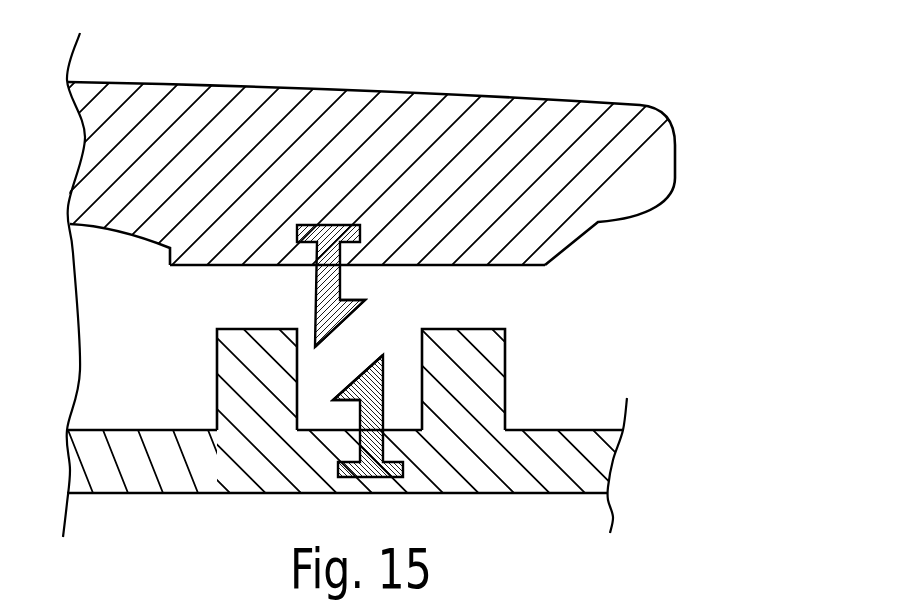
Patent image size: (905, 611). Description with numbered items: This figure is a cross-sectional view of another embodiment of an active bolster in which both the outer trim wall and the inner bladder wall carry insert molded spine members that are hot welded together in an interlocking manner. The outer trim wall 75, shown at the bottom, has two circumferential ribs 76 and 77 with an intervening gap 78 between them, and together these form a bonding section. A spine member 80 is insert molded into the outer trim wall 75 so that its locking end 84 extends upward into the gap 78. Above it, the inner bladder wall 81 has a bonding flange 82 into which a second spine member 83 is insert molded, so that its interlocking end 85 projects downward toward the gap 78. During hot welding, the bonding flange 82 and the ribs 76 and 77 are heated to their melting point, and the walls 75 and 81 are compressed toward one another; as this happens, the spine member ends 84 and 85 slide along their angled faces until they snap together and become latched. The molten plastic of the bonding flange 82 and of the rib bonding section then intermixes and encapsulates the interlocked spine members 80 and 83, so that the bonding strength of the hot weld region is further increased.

The outer trim wall 75 is at (140, 478).
The circumferential rib 76 is at (230, 355).
The circumferential rib 77 is at (492, 387).
The intervening gap 78 is at (405, 365).
The spine member 80 is at (373, 442).
The inner bladder wall 81 is at (550, 117).
The bonding flange 82 is at (522, 247).
The spine member 83 is at (321, 226).
The locking end 84 is at (368, 383).
The interlocking end 85 is at (330, 317).